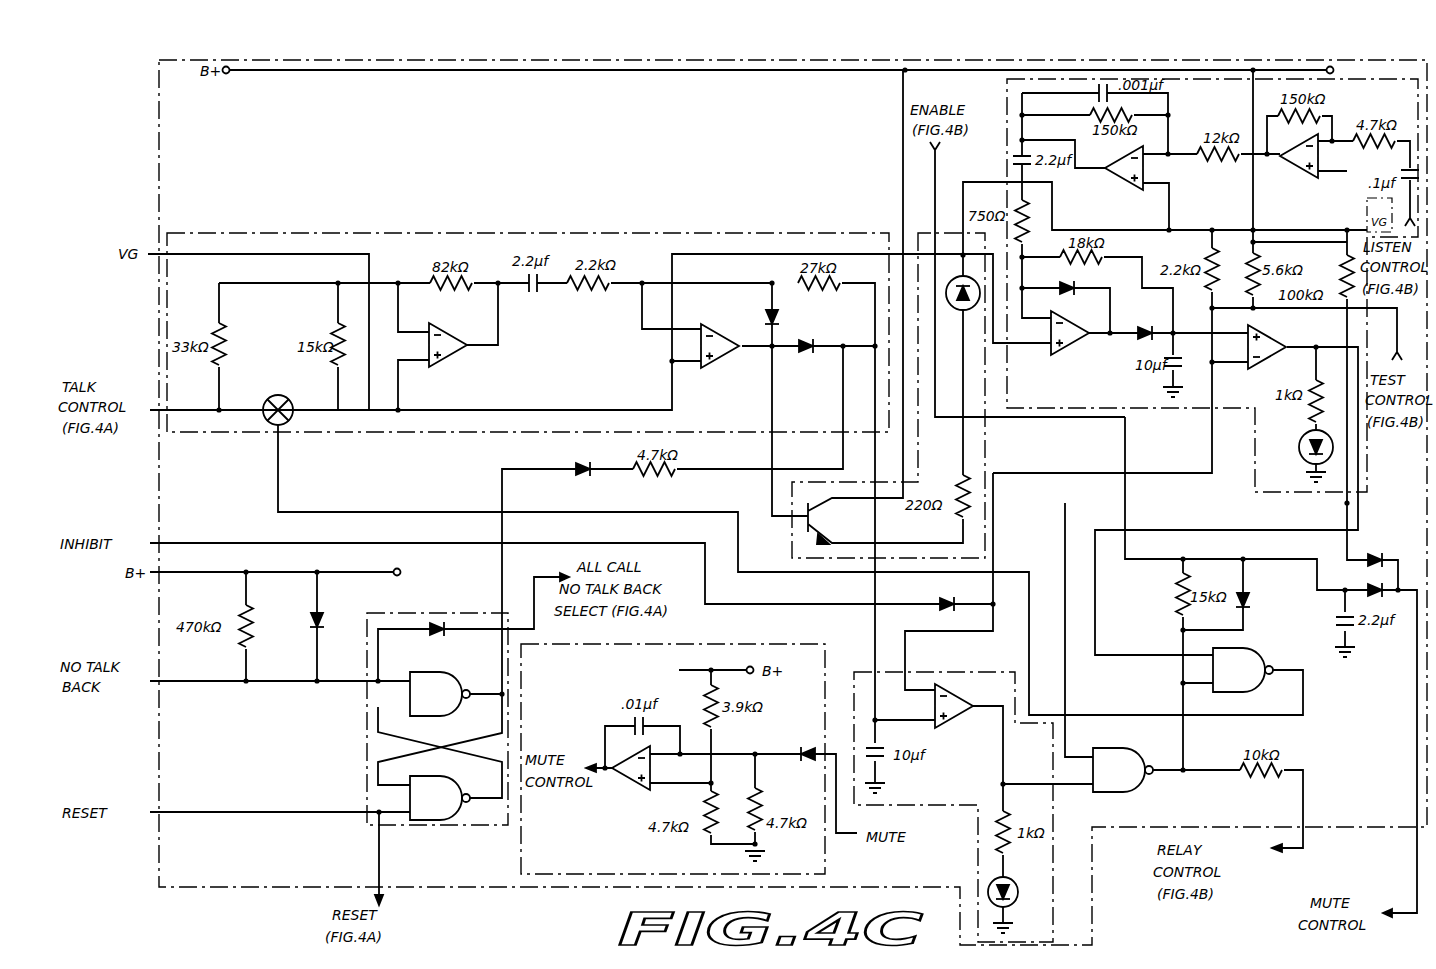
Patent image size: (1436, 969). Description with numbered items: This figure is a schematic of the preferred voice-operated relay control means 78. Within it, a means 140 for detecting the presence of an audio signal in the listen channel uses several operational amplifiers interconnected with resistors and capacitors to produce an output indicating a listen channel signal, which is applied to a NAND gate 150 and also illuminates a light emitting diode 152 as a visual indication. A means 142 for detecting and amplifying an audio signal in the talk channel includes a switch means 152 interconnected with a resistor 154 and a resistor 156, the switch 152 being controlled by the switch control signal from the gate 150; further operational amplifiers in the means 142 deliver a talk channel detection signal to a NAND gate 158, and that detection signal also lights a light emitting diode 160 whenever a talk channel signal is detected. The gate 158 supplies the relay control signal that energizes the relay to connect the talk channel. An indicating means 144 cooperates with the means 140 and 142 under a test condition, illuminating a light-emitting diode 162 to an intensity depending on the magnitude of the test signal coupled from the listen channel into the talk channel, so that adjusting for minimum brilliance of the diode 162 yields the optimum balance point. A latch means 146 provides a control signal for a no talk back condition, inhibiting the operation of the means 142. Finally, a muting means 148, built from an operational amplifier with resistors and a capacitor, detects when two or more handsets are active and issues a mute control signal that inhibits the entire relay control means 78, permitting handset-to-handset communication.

The voice-operated relay control means 78 is at (159, 112).
The means for detecting the presence of an audio signal in the listen channel circui 140 is at (1368, 477).
The means for detecting and amplifying an audio signal in the talk channel circuit 142 is at (448, 432).
The means for indicating the relative magnitude of the signal detected in the talk c 144 is at (987, 435).
The latch means 146 is at (445, 613).
The muting means 148 is at (718, 644).
The NAND gate 150 is at (1255, 648).
The switch means 152 is at (270, 395).
The resistor 154 is at (227, 338).
The resistor 156 is at (336, 330).
The NAND gate 158 is at (1117, 792).
The light emitting diode 160 is at (988, 886).
The light-emitting diode 162 is at (946, 283).